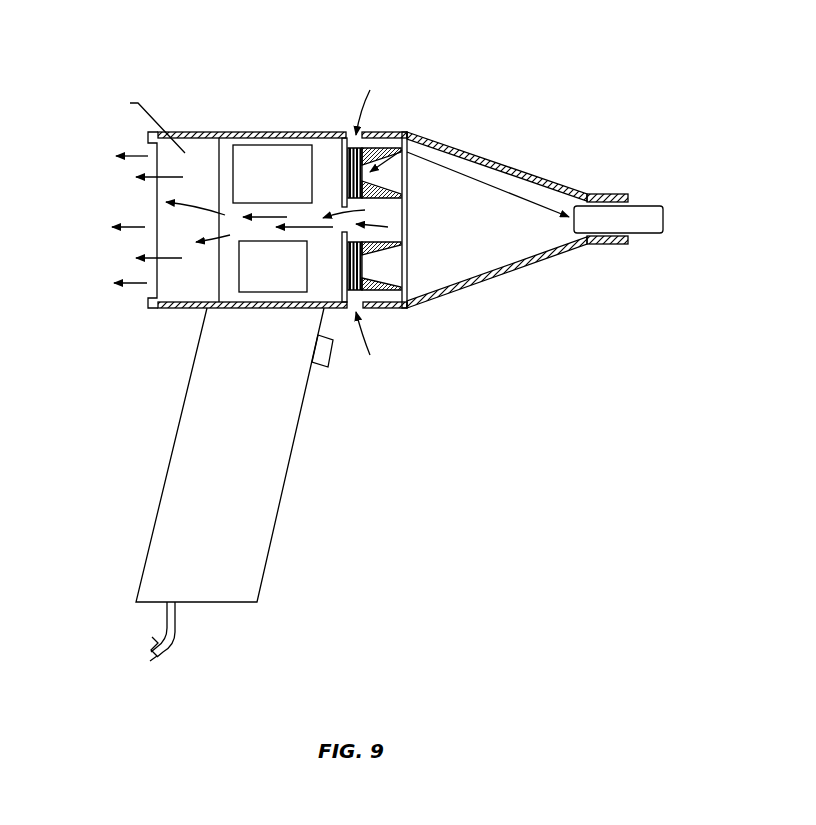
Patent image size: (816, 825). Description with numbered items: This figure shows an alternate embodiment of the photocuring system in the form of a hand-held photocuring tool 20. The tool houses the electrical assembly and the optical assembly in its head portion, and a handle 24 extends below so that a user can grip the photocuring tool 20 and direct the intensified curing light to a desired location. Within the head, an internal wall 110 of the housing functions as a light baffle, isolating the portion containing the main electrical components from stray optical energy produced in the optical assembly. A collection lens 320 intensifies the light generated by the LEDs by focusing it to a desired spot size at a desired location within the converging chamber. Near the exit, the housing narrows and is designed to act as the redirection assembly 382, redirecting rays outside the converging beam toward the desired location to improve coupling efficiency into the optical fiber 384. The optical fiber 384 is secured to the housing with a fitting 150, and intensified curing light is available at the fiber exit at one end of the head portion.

The hand-held photocuring tool 20 is at (459, 85).
The internal wall 110 is at (343, 162).
The collection lens 320 is at (407, 272).
The redirection assembly 382 is at (530, 262).
The fitting 150 is at (630, 241).
The optical fiber 384 is at (645, 205).
The handle 24 is at (177, 437).